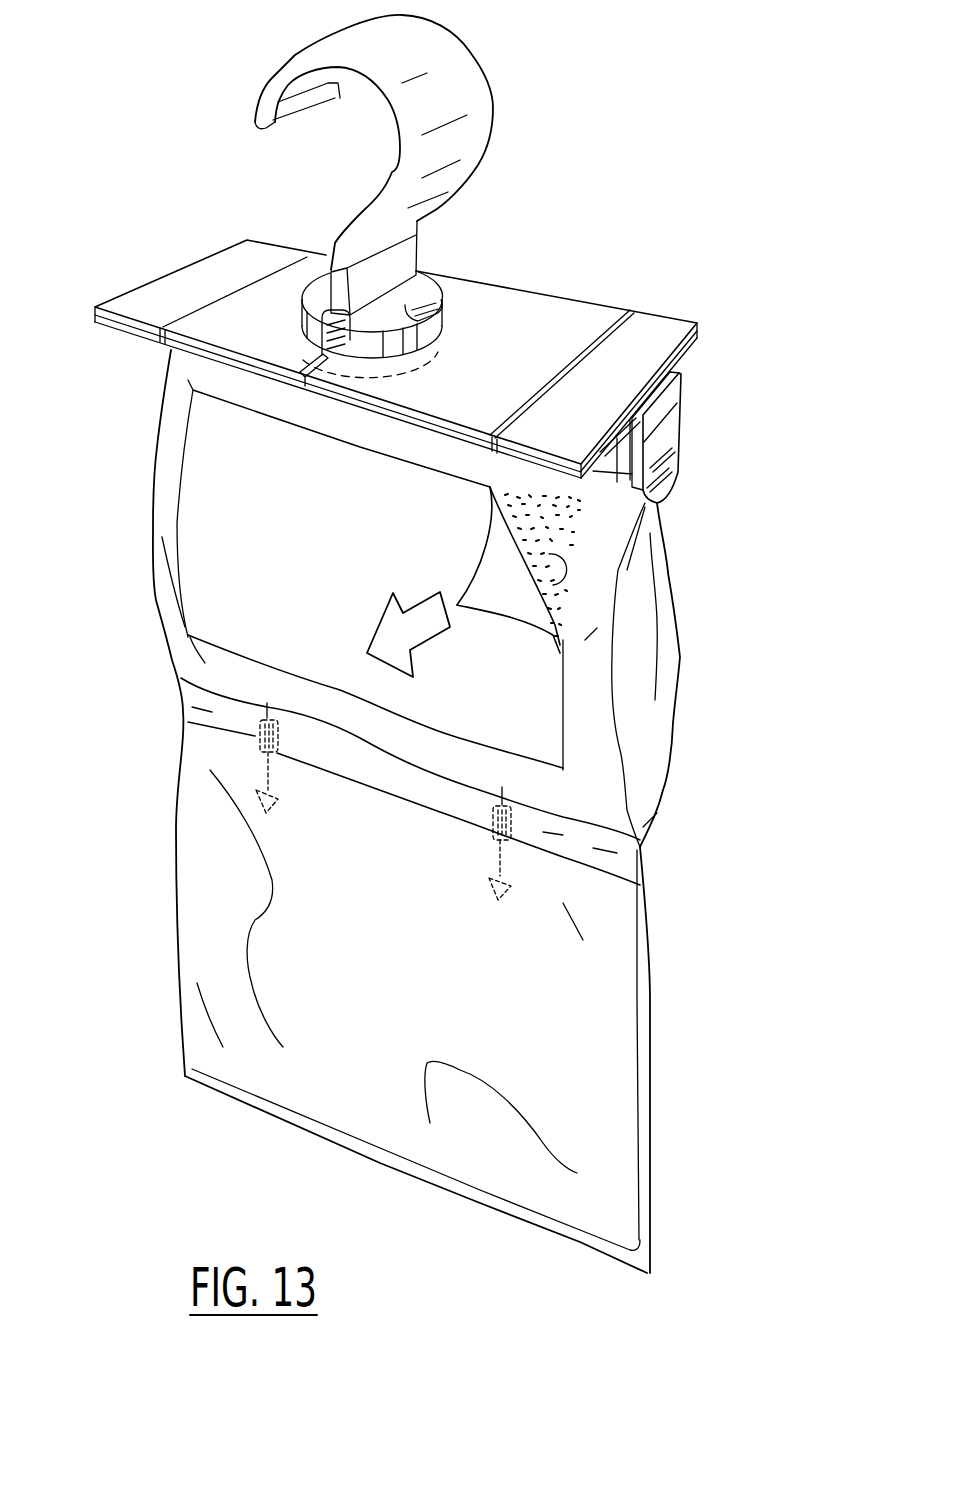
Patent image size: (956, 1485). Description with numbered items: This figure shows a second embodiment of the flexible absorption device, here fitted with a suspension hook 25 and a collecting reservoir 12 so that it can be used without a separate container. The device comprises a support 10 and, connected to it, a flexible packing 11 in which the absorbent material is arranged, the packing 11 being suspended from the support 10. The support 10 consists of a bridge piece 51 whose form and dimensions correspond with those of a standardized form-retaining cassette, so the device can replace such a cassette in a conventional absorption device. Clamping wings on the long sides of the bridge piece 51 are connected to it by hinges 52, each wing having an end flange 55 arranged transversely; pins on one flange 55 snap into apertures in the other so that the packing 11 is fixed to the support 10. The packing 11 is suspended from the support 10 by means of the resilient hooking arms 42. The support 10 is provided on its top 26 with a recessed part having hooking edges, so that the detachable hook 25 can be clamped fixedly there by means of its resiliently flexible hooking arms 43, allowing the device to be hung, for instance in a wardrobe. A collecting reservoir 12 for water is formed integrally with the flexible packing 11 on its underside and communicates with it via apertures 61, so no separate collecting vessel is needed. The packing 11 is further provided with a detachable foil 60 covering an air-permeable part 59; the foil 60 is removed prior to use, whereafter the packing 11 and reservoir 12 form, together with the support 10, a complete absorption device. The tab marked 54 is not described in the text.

The support 10 is at (190, 257).
The flexible packing 11 is at (668, 781).
The collecting reservoir 12 is at (656, 1044).
The suspension hook 25 is at (496, 120).
The top 26 is at (320, 328).
The resilient hooking arms 42 is at (680, 440).
The resiliently flexible hooking arms 43 is at (328, 270).
The bridge piece 51 is at (257, 262).
The hinges 52 is at (500, 456).
The tabs 54 is at (688, 358).
The end flange 55 is at (645, 506).
The air-permeable part 59 is at (567, 587).
The detachable foil 60 is at (488, 594).
The apertures 61 is at (262, 737).